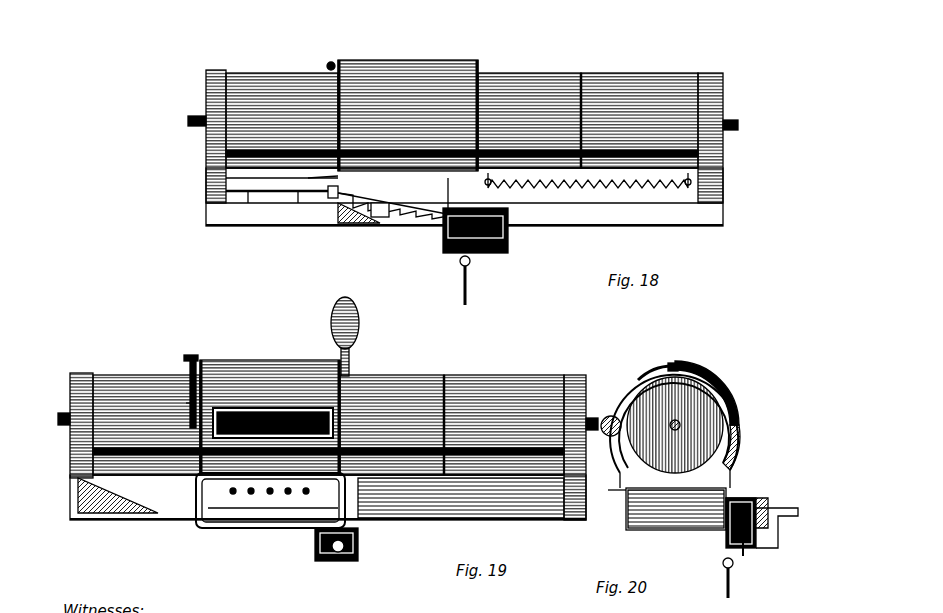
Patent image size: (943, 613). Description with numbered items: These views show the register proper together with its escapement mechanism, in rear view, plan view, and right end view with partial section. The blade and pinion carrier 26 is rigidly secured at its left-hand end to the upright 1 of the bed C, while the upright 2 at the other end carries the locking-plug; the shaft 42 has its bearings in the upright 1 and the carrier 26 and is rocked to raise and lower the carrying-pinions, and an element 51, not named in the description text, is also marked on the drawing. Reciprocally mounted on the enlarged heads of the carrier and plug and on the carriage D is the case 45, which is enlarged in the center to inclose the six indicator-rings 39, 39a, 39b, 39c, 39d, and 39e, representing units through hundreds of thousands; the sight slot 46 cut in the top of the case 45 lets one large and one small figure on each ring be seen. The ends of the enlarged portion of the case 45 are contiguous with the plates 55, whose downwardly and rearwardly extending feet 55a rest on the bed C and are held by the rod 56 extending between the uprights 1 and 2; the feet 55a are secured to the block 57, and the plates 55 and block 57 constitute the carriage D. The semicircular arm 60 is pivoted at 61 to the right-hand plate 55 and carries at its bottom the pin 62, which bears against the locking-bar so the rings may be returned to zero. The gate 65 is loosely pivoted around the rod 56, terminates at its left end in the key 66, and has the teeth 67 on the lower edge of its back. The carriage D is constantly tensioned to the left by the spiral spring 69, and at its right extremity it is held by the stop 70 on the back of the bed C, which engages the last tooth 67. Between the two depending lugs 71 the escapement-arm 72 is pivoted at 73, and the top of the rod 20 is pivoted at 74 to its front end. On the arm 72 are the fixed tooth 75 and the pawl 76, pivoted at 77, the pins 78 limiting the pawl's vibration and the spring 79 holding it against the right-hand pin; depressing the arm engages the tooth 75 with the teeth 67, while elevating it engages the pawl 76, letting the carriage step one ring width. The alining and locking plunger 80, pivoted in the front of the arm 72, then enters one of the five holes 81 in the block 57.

In FIG. 18, the upright 1 is at (703, 65).
In FIG. 19, the upright 1 is at (564, 367).
In FIG. 18, the upright 2 is at (212, 62).
In FIG. 19, the upright 2 is at (74, 364).
In FIG. 20, the upright 2 is at (715, 400).
In FIG. 18, the rod 20 is at (460, 290).
In FIG. 20, the rod 20 is at (724, 578).
In FIG. 18, the blade and pinion carrier 26 is at (640, 66).
In FIG. 19, the blade and pinion carrier 26 is at (508, 368).
In FIG. 20, the blade and pinion carrier 26 is at (675, 425).
In FIG. 19, the indicator-ring 39 is at (212, 400).
In FIG. 19, the indicator-ring 39a is at (228, 400).
In FIG. 19, the indicator-ring 39b is at (246, 400).
In FIG. 19, the indicator-ring 39c is at (265, 400).
In FIG. 19, the indicator-ring 39d is at (284, 400).
In FIG. 19, the indicator-ring 39e is at (302, 400).
In FIG. 18, the shaft 42 is at (738, 108).
In FIG. 19, the shaft 42 is at (586, 410).
In FIG. 20, the shaft 42 is at (610, 390).
In FIG. 18, the case 45 is at (398, 52).
In FIG. 19, the case 45 is at (200, 470).
In FIG. 19, the sight slot 46 is at (205, 520).
In FIG. 18, the shaft 51 is at (186, 108).
In FIG. 19, the shaft 51 is at (55, 405).
In FIG. 20, the shaft 51 is at (672, 413).
In FIG. 18, the plate 55 is at (333, 52).
In FIG. 19, the plate 55 is at (190, 352).
In FIG. 20, the plate 55 is at (700, 370).
In FIG. 19, the foot 55a is at (190, 485).
In FIG. 20, the foot 55a is at (655, 515).
In FIG. 18, the rod 56 is at (205, 175).
In FIG. 19, the rod 56 is at (556, 505).
In FIG. 20, the rod 56 is at (664, 522).
In FIG. 18, the block 57 is at (380, 215).
In FIG. 19, the block 57 is at (262, 505).
In FIG. 20, the block 57 is at (735, 488).
In FIG. 19, the semicircular arm 60 is at (182, 380).
In FIG. 20, the semicircular arm 60 is at (636, 368).
In FIG. 18, the pivot 61 is at (320, 57).
In FIG. 19, the pivot 61 is at (180, 418).
In FIG. 20, the pivot 61 is at (672, 358).
In FIG. 18, the pin 62 is at (292, 196).
In FIG. 20, the pin 62 is at (618, 484).
In FIG. 18, the gate 65 is at (320, 196).
In FIG. 19, the gate 65 is at (200, 490).
In FIG. 20, the gate 65 is at (750, 495).
In FIG. 18, the key 66 is at (310, 182).
In FIG. 19, the key 66 is at (348, 322).
In FIG. 18, the teeth 67 is at (396, 208).
In FIG. 19, the teeth 67 is at (250, 500).
In FIG. 20, the teeth 67 is at (760, 498).
In FIG. 18, the spiral spring 69 is at (670, 196).
In FIG. 18, the stop 70 is at (335, 196).
In FIG. 18, the depending lugs 71 is at (426, 214).
In FIG. 19, the depending lugs 71 is at (280, 503).
In FIG. 20, the depending lugs 71 is at (770, 535).
In FIG. 18, the escapement-arm 72 is at (490, 232).
In FIG. 19, the escapement-arm 72 is at (300, 510).
In FIG. 20, the escapement-arm 72 is at (772, 520).
In FIG. 18, the pivot 73 is at (500, 240).
In FIG. 19, the pivot 73 is at (352, 520).
In FIG. 20, the pivot 73 is at (762, 540).
In FIG. 18, the pivot 74 is at (450, 246).
In FIG. 19, the pivot 74 is at (336, 544).
In FIG. 19, the fixed tooth 75 is at (355, 515).
In FIG. 20, the fixed tooth 75 is at (755, 486).
In FIG. 18, the pawl 76 is at (510, 235).
In FIG. 19, the pawl 76 is at (348, 540).
In FIG. 20, the pawl 76 is at (792, 510).
In FIG. 18, the pivot 77 is at (505, 225).
In FIG. 19, the pivot 77 is at (330, 554).
In FIG. 20, the pivot 77 is at (790, 505).
In FIG. 18, the pins 78 is at (600, 196).
In FIG. 19, the pins 78 is at (318, 552).
In FIG. 20, the pins 78 is at (775, 505).
In FIG. 18, the spring 79 is at (437, 222).
In FIG. 19, the spring 79 is at (312, 520).
In FIG. 20, the spring 79 is at (768, 505).
In FIG. 20, the alining and locking plunger 80 is at (732, 530).
In FIG. 18, the holes 81 is at (375, 205).
In FIG. 19, the holes 81 is at (235, 500).
In FIG. 20, the holes 81 is at (728, 488).
In FIG. 18, the bed C is at (606, 218).
In FIG. 19, the bed C is at (506, 512).
In FIG. 20, the bed C is at (617, 519).
In FIG. 18, the carriage D is at (345, 214).
In FIG. 19, the carriage D is at (123, 509).
In FIG. 20, the carriage D is at (759, 504).